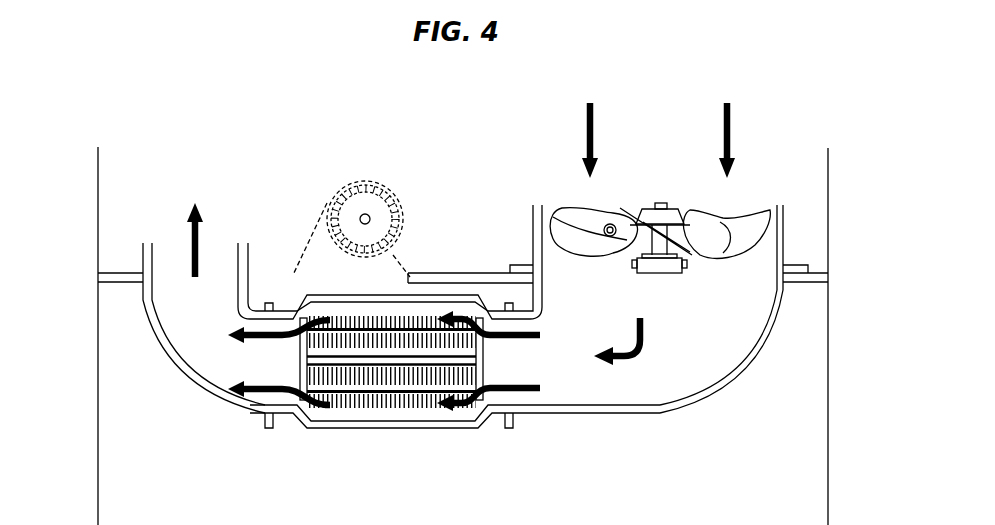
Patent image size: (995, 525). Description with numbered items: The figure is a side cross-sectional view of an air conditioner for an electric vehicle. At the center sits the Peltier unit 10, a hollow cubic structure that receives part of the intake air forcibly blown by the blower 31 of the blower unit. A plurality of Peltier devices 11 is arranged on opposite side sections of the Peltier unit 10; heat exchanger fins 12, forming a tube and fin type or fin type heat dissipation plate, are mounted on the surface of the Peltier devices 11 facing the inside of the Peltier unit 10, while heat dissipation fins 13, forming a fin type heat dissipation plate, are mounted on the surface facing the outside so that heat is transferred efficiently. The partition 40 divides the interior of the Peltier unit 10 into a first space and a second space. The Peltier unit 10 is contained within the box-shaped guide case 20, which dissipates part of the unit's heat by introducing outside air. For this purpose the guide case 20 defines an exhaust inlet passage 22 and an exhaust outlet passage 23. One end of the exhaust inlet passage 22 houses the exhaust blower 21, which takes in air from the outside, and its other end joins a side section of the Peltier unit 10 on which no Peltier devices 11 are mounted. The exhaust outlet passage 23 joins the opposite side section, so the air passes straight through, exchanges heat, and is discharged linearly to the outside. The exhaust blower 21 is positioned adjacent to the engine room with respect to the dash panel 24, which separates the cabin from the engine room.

The Peltier unit 10 is at (300, 365).
The Peltier devices 11 is at (432, 395).
The heat exchanger fins 12 is at (413, 382).
The heat dissipation fins 13 is at (338, 410).
The partition 40 is at (375, 362).
The guide case 20 is at (470, 428).
The exhaust blower 21 is at (745, 218).
The exhaust inlet passage 22 is at (643, 387).
The exhaust outlet passage 23 is at (190, 358).
The dash panel 24 is at (457, 280).
The blower 31 is at (362, 186).